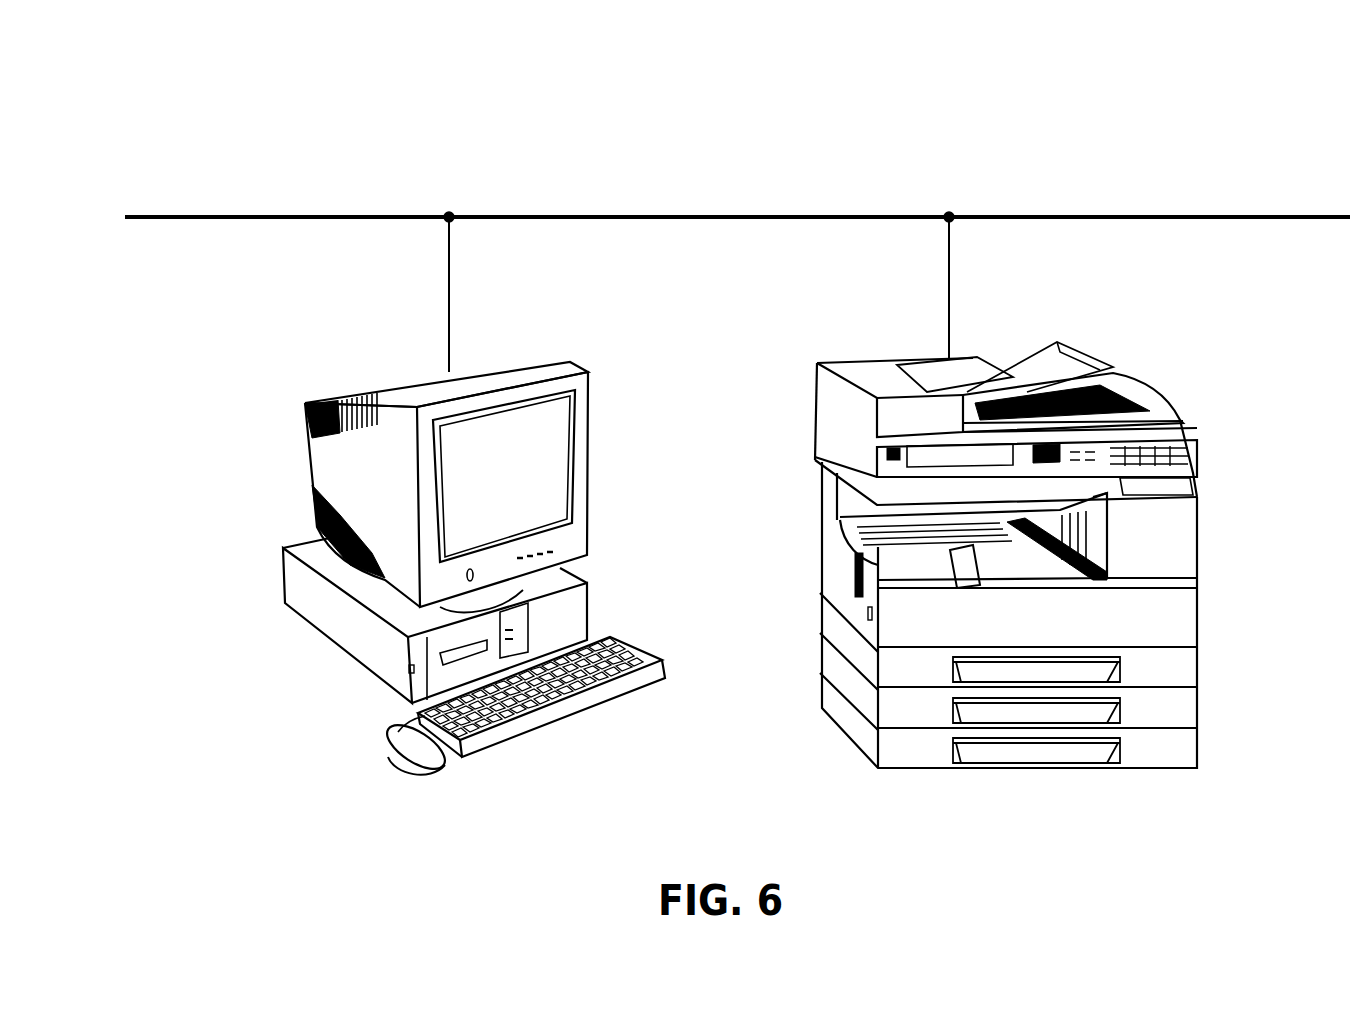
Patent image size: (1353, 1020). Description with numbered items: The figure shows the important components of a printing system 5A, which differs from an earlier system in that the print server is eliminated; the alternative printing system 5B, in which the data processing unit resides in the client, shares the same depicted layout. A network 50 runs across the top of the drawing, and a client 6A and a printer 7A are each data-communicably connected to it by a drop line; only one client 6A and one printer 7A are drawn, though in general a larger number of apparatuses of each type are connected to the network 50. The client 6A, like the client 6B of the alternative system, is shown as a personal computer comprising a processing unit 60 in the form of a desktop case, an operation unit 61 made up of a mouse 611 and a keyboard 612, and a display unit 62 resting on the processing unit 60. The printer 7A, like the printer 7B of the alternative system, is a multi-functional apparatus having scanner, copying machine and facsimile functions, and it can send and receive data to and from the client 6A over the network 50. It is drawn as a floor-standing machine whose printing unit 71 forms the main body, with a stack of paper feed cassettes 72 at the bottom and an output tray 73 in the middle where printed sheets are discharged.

The printing system 5A is at (278, 51).
The printing system 5B is at (340, 66).
The network 50 is at (528, 215).
The client 6A is at (478, 547).
The client 6B is at (336, 356).
The processing unit 60 is at (352, 656).
The operation unit 61 is at (496, 729).
The mouse 611 is at (397, 767).
The keyboard 612 is at (598, 705).
The display unit 62 is at (597, 436).
The printer 7A is at (1006, 507).
The printer 7B is at (837, 338).
The printing unit 71 is at (1214, 592).
The paper feed cassettes 72 is at (827, 620).
The output tray 73 is at (970, 535).